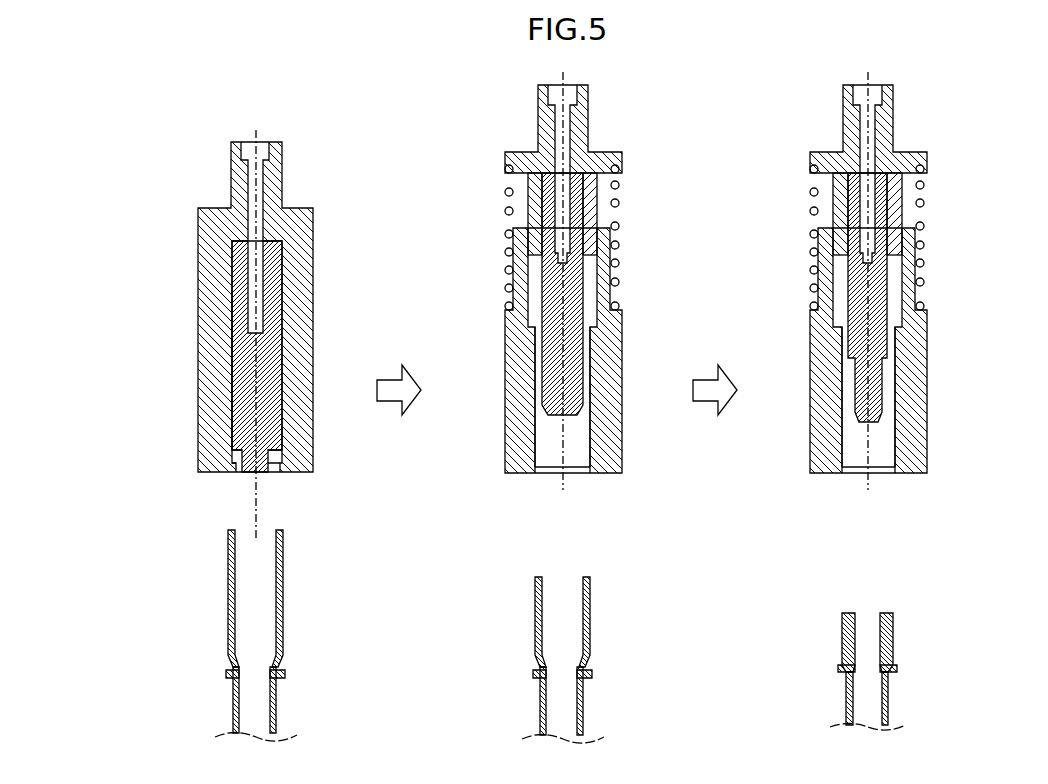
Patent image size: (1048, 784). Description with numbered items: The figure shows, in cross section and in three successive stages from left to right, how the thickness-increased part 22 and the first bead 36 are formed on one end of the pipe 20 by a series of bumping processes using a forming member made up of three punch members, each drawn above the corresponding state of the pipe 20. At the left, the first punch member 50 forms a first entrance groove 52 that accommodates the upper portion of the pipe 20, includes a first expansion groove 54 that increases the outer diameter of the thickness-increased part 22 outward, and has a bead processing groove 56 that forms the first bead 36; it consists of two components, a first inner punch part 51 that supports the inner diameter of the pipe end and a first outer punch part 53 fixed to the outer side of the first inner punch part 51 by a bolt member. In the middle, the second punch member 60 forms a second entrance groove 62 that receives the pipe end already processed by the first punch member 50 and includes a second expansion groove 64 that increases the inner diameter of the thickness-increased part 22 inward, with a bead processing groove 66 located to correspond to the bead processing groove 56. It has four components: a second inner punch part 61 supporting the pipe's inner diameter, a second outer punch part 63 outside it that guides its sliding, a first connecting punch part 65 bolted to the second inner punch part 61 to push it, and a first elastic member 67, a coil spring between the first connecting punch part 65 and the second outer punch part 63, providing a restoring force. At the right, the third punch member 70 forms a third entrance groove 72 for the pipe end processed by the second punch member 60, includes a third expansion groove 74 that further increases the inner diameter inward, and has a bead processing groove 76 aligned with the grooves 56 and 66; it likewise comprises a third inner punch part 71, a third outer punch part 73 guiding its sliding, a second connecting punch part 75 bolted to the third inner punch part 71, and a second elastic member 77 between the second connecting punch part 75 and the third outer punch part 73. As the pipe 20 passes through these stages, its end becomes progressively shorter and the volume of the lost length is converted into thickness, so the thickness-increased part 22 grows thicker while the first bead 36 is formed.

The pipe 20 is at (277, 712).
The thickness-increased part 22 is at (284, 620).
The first bead 36 is at (286, 675).
The first punch member 50 is at (321, 167).
The first inner punch part 51 is at (232, 300).
The first entrance groove 52 is at (281, 465).
The first outer punch part 53 is at (313, 228).
The first expansion groove 54 is at (278, 306).
The bead processing groove 56 is at (232, 474).
The second punch member 60 is at (651, 178).
The second inner punch part 61 is at (598, 290).
The second entrance groove 62 is at (586, 445).
The second outer punch part 63 is at (616, 338).
The second expansion groove 64 is at (584, 375).
The first connecting punch part 65 is at (588, 143).
The bead processing groove 66 is at (536, 476).
The first elastic member 67 is at (506, 209).
The third punch member 70 is at (956, 178).
The third inner punch part 71 is at (903, 290).
The third entrance groove 72 is at (891, 445).
The third outer punch part 73 is at (921, 338).
The third expansion groove 74 is at (883, 383).
The second connecting punch part 75 is at (893, 143).
The bead processing groove 76 is at (842, 476).
The second elastic member 77 is at (811, 209).